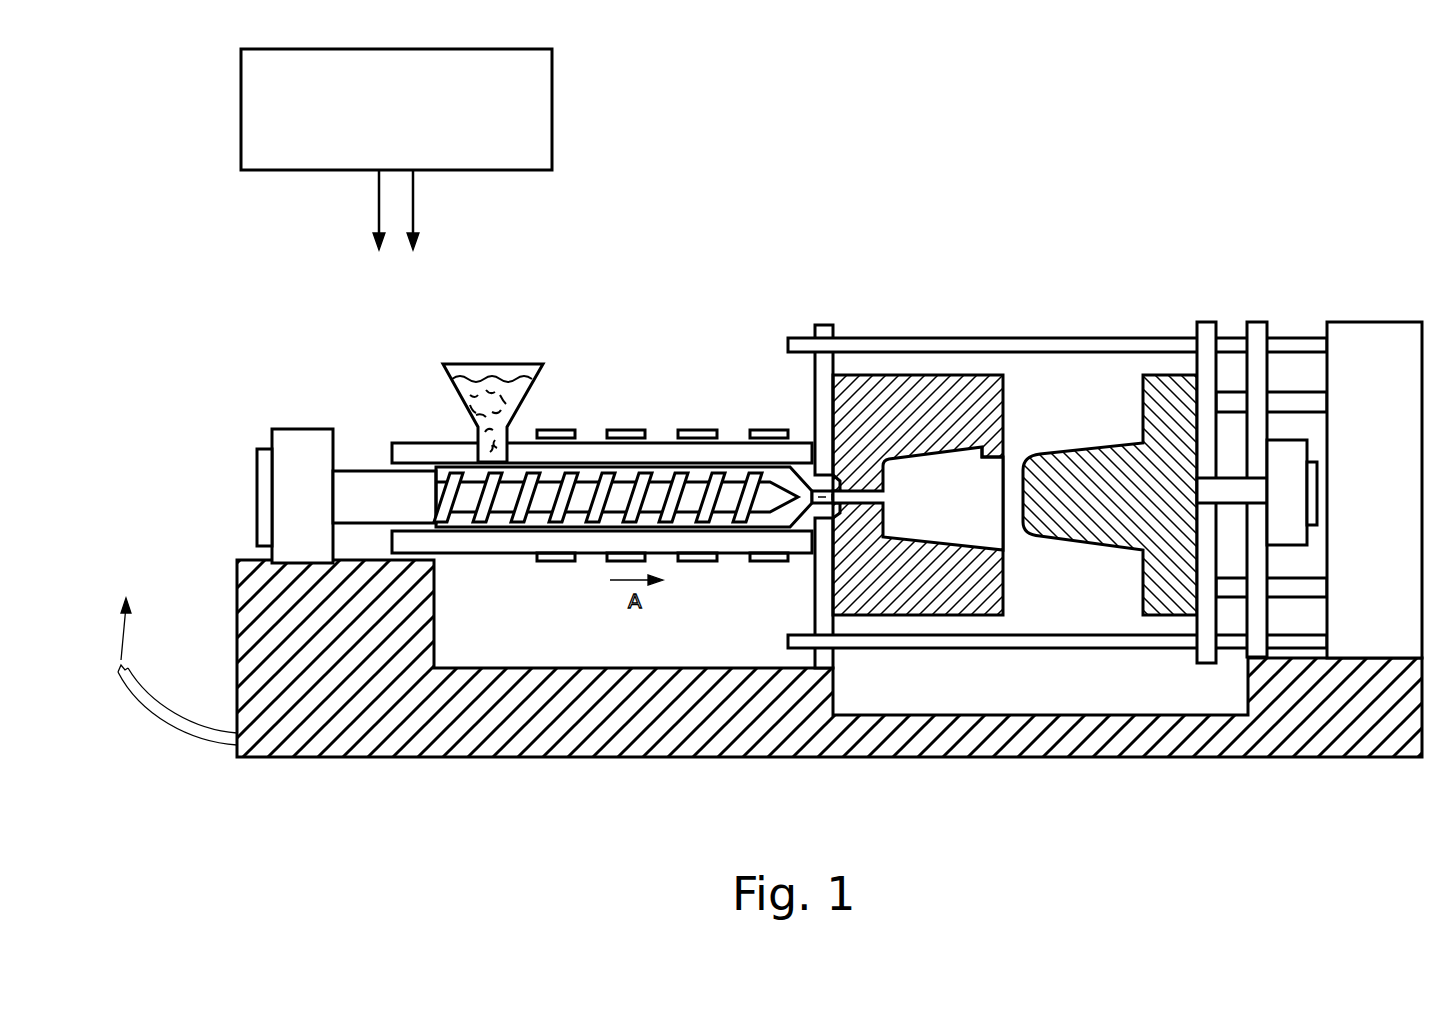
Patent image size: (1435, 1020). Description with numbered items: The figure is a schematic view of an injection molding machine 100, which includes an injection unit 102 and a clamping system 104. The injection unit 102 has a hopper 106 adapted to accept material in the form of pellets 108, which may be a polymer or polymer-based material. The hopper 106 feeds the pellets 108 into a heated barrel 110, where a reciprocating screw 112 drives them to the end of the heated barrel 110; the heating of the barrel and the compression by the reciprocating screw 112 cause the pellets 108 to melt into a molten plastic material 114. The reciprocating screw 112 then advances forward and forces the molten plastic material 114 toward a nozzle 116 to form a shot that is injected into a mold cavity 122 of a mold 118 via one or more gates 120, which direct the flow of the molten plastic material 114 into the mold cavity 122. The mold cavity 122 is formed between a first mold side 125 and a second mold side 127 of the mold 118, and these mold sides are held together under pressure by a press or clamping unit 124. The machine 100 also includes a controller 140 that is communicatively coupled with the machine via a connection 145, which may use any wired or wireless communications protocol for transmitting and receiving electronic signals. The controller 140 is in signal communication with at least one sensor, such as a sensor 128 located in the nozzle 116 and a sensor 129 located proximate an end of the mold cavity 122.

The injection molding machine 100 is at (793, 229).
The injection unit 102 is at (588, 603).
The clamping system 104 is at (1105, 539).
The hopper 106 is at (504, 364).
The pellets 108 is at (478, 405).
The heated barrel 110 is at (590, 438).
The reciprocating screw 112 is at (518, 500).
The molten plastic material 114 is at (663, 452).
The nozzle 116 is at (848, 480).
The mold 118 is at (1008, 366).
The gates 120 is at (878, 462).
The mold cavity 122 is at (946, 462).
The clamping unit 124 is at (1334, 319).
The first mold side 125 is at (1015, 482).
The second mold side 127 is at (1115, 537).
The sensor 128 is at (812, 465).
The sensor 129 is at (990, 455).
The controller 140 is at (497, 47).
The connection 145 is at (377, 192).